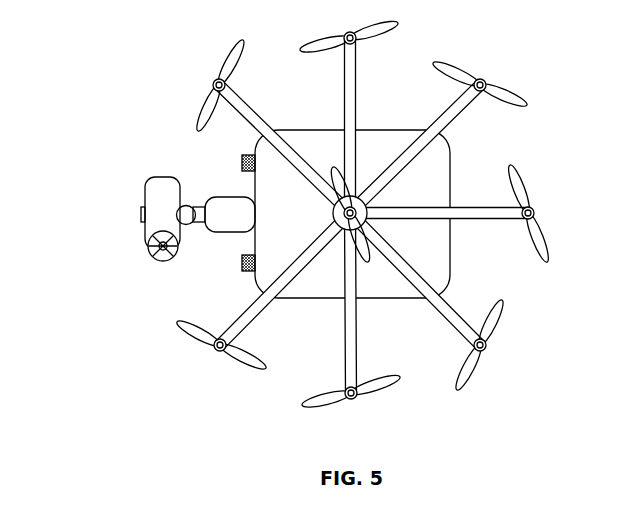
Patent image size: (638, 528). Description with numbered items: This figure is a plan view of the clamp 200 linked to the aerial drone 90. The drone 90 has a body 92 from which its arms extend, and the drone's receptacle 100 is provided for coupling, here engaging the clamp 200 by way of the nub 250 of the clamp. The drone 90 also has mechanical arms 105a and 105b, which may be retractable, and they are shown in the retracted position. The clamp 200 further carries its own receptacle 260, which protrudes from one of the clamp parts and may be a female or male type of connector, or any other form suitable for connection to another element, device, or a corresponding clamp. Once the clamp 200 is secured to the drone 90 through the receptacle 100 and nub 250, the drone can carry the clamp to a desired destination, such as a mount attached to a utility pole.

The aerial drone 90 is at (380, 214).
The body 92 is at (450, 178).
The receptacle 100 is at (222, 226).
The mechanical arm 105a is at (242, 161).
The mechanical arm 105b is at (240, 264).
The clamp 200 is at (153, 178).
The nub 250 is at (200, 206).
The receptacle 260 is at (110, 176).